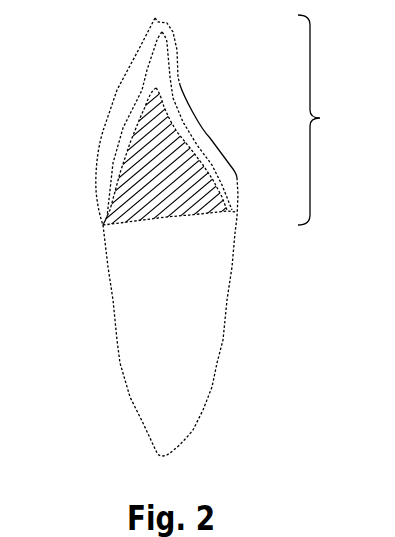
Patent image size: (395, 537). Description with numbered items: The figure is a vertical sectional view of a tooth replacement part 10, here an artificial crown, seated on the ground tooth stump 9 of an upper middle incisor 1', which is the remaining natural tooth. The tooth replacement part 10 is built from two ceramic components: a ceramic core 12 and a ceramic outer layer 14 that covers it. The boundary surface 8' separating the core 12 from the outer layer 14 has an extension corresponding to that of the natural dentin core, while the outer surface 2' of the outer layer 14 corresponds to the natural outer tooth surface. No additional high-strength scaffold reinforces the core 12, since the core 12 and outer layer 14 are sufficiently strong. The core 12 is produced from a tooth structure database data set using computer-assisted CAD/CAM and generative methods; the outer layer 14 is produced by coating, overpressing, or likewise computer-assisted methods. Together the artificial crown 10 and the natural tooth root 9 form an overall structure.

The outer surface 2' is at (201, 95).
The boundary surface 8' is at (179, 128).
The ceramic outer layer 14 is at (113, 116).
The ceramic core 12 is at (116, 176).
The tooth replacement part 10 is at (326, 120).
The ground tooth stump 9 is at (193, 218).
The upper middle incisor 1' is at (195, 317).